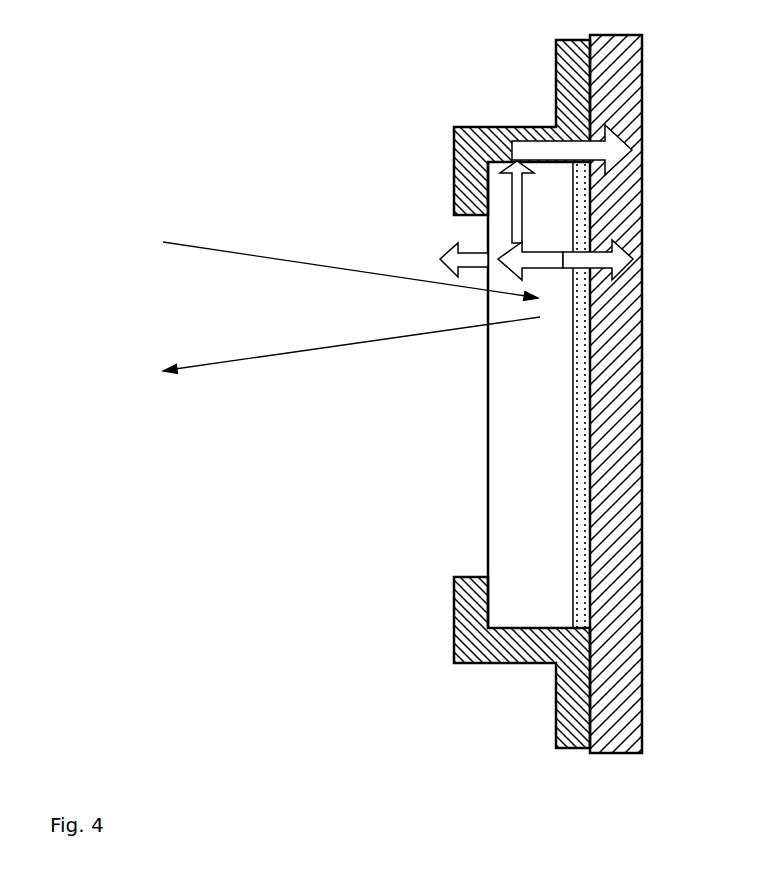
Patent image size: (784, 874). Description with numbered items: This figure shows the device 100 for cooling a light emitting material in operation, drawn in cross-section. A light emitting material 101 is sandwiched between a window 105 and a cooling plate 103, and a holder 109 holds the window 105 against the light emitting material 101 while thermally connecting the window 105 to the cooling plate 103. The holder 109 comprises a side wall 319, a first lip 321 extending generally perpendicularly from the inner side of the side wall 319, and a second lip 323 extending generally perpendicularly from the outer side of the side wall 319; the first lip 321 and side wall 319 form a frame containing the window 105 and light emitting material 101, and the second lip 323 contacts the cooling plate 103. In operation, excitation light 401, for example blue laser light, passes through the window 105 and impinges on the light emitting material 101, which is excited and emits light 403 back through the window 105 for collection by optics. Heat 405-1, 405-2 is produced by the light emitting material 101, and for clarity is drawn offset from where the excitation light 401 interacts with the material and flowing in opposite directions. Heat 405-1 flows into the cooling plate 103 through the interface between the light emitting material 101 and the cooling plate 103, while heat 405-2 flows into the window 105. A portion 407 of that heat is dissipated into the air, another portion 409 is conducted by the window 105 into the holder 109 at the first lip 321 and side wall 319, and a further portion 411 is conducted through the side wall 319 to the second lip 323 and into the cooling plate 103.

The device 100 is at (260, 736).
The light emitting material 101 is at (573, 405).
The cooling plate 103 is at (632, 100).
The window 105 is at (498, 422).
The holder 109 is at (444, 196).
The side wall 319 is at (482, 128).
The first lip 321 is at (460, 150).
The second lip 323 is at (562, 55).
The excitation light 401 is at (250, 253).
The light 403 is at (267, 358).
The heat 405-1 is at (616, 267).
The heat 405-2 is at (552, 267).
The portion of heat 407 is at (439, 259).
The portion of heat 409 is at (512, 198).
The further portion of heat 411 is at (584, 158).